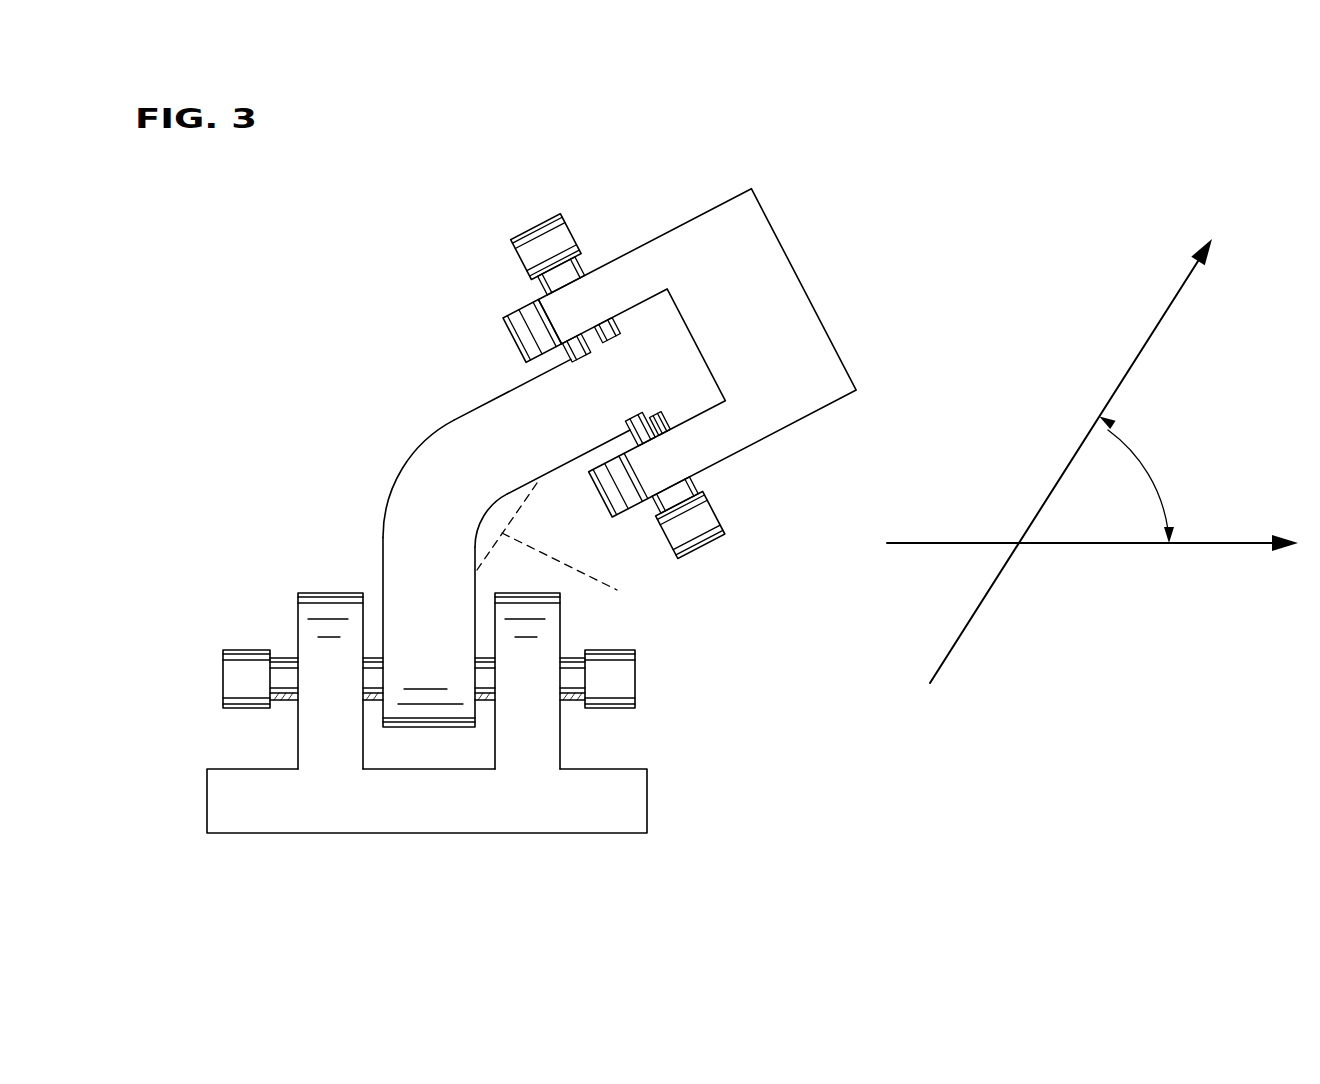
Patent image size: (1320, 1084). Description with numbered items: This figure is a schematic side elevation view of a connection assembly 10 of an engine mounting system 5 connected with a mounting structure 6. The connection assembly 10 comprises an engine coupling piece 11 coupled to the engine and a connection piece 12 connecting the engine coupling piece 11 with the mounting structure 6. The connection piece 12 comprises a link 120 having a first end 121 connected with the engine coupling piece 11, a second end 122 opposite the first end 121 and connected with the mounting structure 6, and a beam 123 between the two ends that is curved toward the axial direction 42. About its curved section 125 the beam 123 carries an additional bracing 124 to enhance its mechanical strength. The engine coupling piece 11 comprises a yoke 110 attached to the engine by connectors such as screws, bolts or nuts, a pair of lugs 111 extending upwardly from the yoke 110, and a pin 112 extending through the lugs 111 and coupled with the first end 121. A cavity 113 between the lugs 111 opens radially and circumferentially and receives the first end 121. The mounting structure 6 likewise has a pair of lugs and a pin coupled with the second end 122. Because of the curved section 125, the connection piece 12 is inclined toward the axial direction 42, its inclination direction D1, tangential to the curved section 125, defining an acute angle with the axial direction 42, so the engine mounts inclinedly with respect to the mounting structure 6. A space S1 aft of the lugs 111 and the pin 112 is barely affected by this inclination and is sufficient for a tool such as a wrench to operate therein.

The engine mounting system 5 is at (466, 121).
The connection assembly 10 is at (362, 242).
The connection piece 12 is at (345, 392).
The link 120 is at (428, 478).
The first end 121 is at (420, 597).
The second end 122 is at (637, 345).
The beam 123 is at (423, 447).
The additional bracing 124 is at (567, 549).
The curved section 125 is at (455, 453).
The engine coupling piece 11 is at (160, 797).
The yoke 110 is at (287, 808).
The lugs 111 is at (533, 735).
The pin 112 is at (280, 668).
The cavity 113 is at (418, 733).
The mounting structure 6 is at (840, 287).
The space S1 is at (708, 675).
The inclination direction D1 is at (1156, 328).
The axial direction 42 is at (1102, 545).